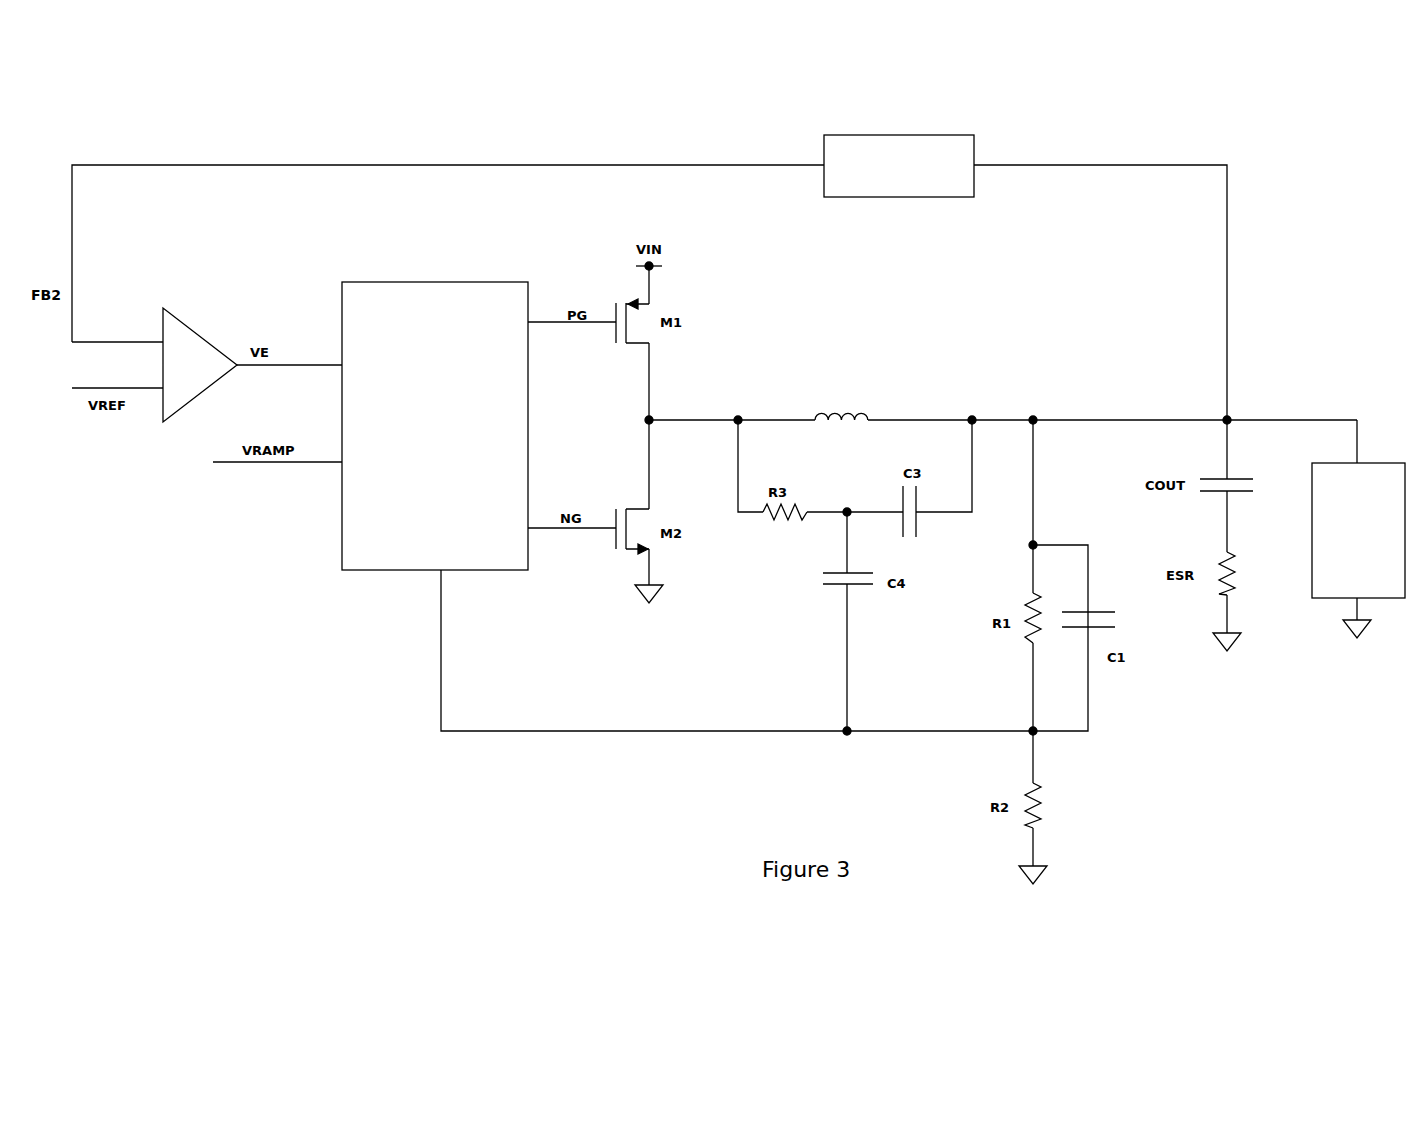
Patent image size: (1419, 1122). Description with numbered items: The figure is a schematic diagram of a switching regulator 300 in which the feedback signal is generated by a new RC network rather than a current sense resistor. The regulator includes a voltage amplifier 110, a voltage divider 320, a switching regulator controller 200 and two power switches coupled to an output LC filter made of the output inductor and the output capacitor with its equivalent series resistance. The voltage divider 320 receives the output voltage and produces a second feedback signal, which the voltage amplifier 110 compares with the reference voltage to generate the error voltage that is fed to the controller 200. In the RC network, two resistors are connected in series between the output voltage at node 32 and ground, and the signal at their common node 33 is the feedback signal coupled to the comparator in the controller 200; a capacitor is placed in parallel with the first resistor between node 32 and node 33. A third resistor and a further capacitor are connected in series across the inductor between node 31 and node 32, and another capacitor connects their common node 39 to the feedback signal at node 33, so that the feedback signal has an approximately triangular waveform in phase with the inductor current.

The voltage amplifier 110 is at (180, 317).
The switching regulator controller 200 is at (435, 426).
The switching regulator 300 is at (1001, 384).
The node 31 is at (695, 423).
The node 32 is at (1333, 418).
The common node 33 is at (880, 733).
The common node 39 is at (849, 508).
The voltage divider 320 is at (972, 153).